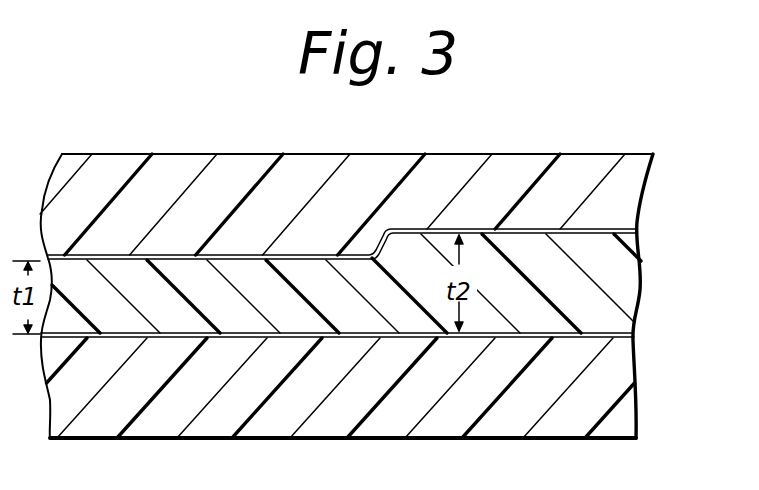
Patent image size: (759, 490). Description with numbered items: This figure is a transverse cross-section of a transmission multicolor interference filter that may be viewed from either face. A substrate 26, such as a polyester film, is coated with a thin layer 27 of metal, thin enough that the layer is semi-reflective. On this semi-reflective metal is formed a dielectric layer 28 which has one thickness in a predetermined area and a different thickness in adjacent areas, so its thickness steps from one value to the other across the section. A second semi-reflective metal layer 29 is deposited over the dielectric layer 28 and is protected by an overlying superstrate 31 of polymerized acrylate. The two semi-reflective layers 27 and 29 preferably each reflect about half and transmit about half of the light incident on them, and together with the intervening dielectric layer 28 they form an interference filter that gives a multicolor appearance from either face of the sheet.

The substrate 26 is at (636, 395).
The semi-reflective metal layer 27 is at (583, 337).
The dielectric layer 28 is at (640, 283).
The second semi-reflective metal layer 29 is at (637, 229).
The superstrate 31 is at (634, 190).